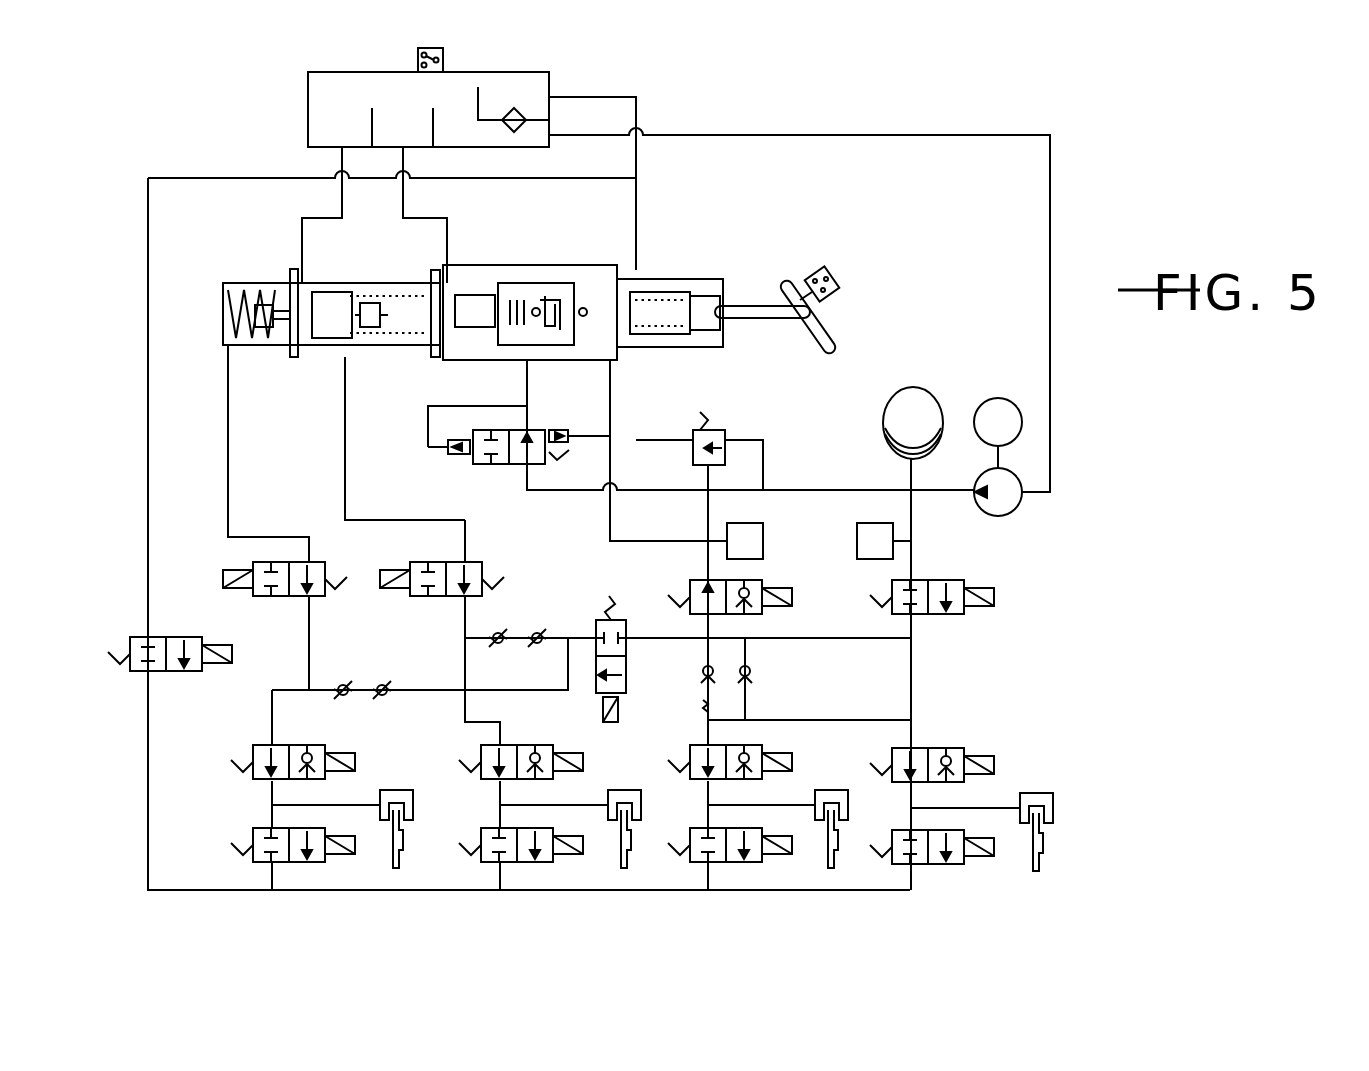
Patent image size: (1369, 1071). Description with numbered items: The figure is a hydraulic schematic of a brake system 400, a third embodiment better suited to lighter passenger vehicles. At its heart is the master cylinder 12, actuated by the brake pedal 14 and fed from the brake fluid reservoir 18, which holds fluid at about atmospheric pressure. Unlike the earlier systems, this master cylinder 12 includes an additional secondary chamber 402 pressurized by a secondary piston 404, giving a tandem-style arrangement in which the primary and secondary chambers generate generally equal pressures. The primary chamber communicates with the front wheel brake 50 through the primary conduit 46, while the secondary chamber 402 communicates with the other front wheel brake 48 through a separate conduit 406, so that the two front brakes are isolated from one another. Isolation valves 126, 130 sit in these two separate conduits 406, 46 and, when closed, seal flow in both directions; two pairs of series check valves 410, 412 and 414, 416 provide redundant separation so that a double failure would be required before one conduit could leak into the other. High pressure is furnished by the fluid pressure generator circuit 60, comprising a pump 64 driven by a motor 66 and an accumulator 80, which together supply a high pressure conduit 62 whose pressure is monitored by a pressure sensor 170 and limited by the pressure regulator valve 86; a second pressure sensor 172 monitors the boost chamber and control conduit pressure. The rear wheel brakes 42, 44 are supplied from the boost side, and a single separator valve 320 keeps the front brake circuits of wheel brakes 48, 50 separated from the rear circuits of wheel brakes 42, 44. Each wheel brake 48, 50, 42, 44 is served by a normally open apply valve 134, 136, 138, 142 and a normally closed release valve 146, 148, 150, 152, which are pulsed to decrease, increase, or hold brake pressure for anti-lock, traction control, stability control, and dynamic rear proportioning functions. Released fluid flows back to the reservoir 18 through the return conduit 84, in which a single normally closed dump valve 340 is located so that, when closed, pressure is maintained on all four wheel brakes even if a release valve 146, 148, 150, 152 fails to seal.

The brake system 400 is at (884, 107).
The brake fluid reservoir 18 is at (548, 88).
The master cylinder 12 is at (451, 273).
The brake pedal 14 is at (828, 337).
The fluid pressure generator circuit 60 is at (1012, 402).
The high pressure conduit 62 is at (795, 490).
The pump 64 is at (1004, 516).
The motor 66 is at (1010, 398).
The accumulator 80 is at (913, 387).
The return conduit 84 is at (150, 412).
The pressure regulator valve 86 is at (500, 463).
The primary conduit 46 is at (345, 408).
The secondary chamber 402 is at (222, 312).
The secondary piston 404 is at (258, 290).
The conduit 406 is at (232, 390).
The isolation valve 126 is at (298, 596).
The isolation valve 130 is at (452, 596).
The dump valve 340 is at (206, 600).
The check valve 410 is at (343, 685).
The check valve 412 is at (410, 652).
The check valve 414 is at (505, 633).
The check valve 416 is at (540, 645).
The separator valve 320 is at (612, 616).
The pressure sensor 170 is at (870, 527).
The pressure sensor 172 is at (727, 527).
The apply valve 134 is at (300, 745).
The apply valve 136 is at (532, 745).
The apply valve 138 is at (738, 745).
The apply valve 142 is at (955, 748).
The release valve 146 is at (290, 865).
The release valve 148 is at (518, 865).
The release valve 150 is at (728, 865).
The release valve 152 is at (922, 866).
The wheel brake 48 is at (413, 797).
The wheel brake 50 is at (630, 800).
The wheel brake 42 is at (838, 790).
The wheel brake 44 is at (1045, 793).